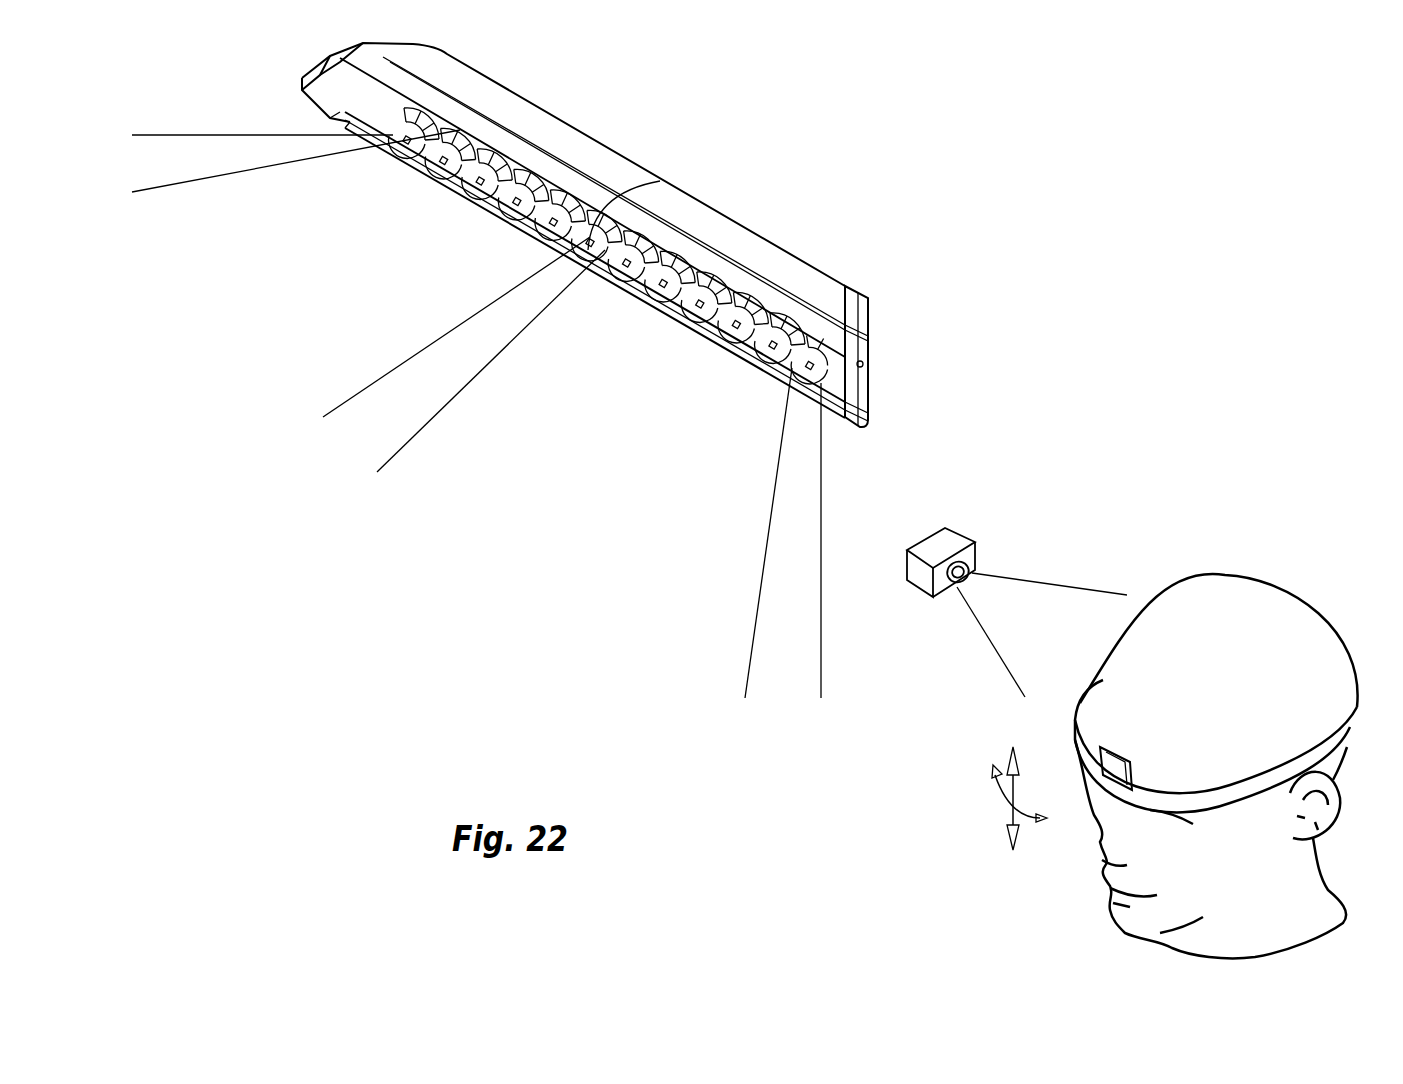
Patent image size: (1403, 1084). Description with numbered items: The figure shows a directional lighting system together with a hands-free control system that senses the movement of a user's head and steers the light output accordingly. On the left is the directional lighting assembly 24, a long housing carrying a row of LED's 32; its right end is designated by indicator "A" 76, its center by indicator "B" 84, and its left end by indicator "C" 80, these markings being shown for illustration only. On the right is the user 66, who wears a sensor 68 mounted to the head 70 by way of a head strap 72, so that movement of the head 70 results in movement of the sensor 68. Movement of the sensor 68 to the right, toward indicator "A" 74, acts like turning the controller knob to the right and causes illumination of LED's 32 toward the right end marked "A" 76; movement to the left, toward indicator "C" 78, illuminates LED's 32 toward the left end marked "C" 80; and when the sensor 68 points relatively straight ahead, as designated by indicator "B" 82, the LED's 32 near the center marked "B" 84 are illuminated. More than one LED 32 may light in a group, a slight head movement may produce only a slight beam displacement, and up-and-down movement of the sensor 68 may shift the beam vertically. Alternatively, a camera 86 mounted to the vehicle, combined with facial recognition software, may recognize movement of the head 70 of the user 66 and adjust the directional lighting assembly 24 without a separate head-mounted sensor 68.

The directional lighting assembly 24 is at (828, 210).
The LED's 32 is at (736, 325).
The user 66 is at (1228, 683).
The sensor 68 is at (1118, 767).
The head 70 is at (1242, 603).
The head strap 72 is at (1290, 750).
The indicator "A" 74 is at (982, 743).
The indicator "A" 76 is at (140, 172).
The indicator "C" 78 is at (1080, 838).
The indicator "C" 80 is at (788, 708).
The indicator "B" 82 is at (975, 828).
The indicator "B" 84 is at (338, 447).
The camera 86 is at (945, 543).